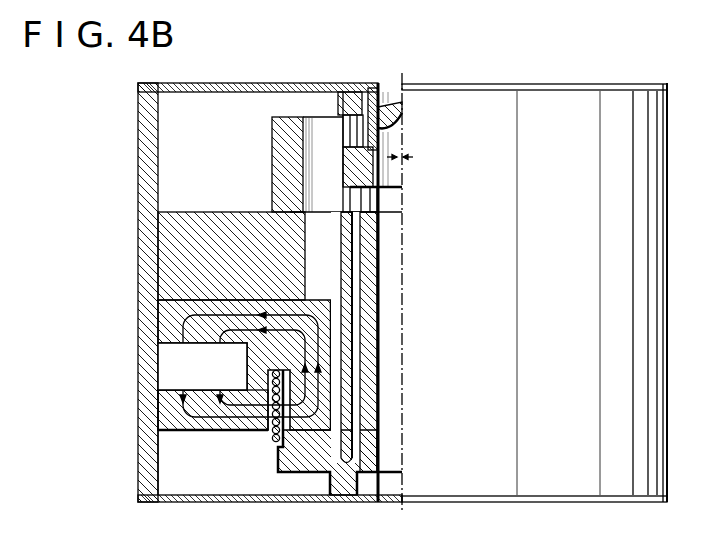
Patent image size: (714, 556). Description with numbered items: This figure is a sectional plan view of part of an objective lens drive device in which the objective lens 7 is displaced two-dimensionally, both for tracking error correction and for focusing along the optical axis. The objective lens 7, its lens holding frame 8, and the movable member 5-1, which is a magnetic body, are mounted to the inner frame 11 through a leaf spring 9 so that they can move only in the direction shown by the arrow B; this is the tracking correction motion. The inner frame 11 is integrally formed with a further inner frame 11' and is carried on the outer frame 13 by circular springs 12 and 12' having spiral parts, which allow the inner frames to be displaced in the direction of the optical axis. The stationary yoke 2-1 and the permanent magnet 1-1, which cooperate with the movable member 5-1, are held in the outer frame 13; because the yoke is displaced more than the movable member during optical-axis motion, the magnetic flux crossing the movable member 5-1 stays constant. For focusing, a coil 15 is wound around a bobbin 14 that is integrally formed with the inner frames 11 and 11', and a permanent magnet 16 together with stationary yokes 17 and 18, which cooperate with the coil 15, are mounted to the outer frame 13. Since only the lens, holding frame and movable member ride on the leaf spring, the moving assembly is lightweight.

The permanent magnet 1-1 is at (272, 140).
The stationary yoke 2-1 is at (327, 106).
The movable member 5-1 is at (346, 168).
The objective lens 7 is at (396, 118).
The lens holding frame 8 is at (370, 88).
The leaf spring 9 is at (350, 437).
The inner frame 11 is at (400, 292).
The inner frame 11' is at (368, 121).
The circular spring 12 is at (402, 71).
The circular spring 12' is at (402, 515).
The outer frame 13 is at (138, 262).
The bobbin 14 is at (285, 456).
The coil 15 is at (272, 440).
The permanent magnet 16 is at (165, 365).
The stationary yoke 17 is at (160, 319).
The stationary yoke 18 is at (160, 411).
The direction of tracking displacement B is at (401, 166).